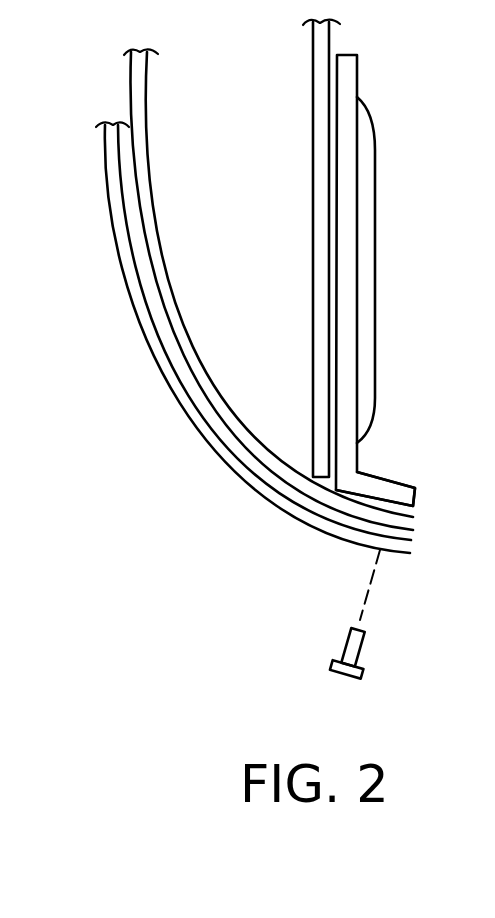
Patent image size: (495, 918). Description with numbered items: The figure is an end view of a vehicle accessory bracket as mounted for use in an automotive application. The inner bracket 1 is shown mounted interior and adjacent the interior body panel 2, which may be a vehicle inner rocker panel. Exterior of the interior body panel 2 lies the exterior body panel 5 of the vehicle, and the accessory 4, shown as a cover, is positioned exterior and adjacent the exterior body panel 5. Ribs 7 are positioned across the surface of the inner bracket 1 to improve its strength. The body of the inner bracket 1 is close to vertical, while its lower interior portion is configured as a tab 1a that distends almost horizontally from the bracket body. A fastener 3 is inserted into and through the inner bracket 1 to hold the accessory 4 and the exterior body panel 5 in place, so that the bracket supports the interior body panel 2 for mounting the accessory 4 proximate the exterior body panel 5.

The inner bracket 1 is at (358, 223).
The tab 1a is at (423, 475).
The interior body panel 2 is at (313, 78).
The fastener 3 is at (362, 648).
The accessory 4 is at (108, 170).
The exterior body panel 5 is at (131, 87).
The ribs 7 is at (375, 300).